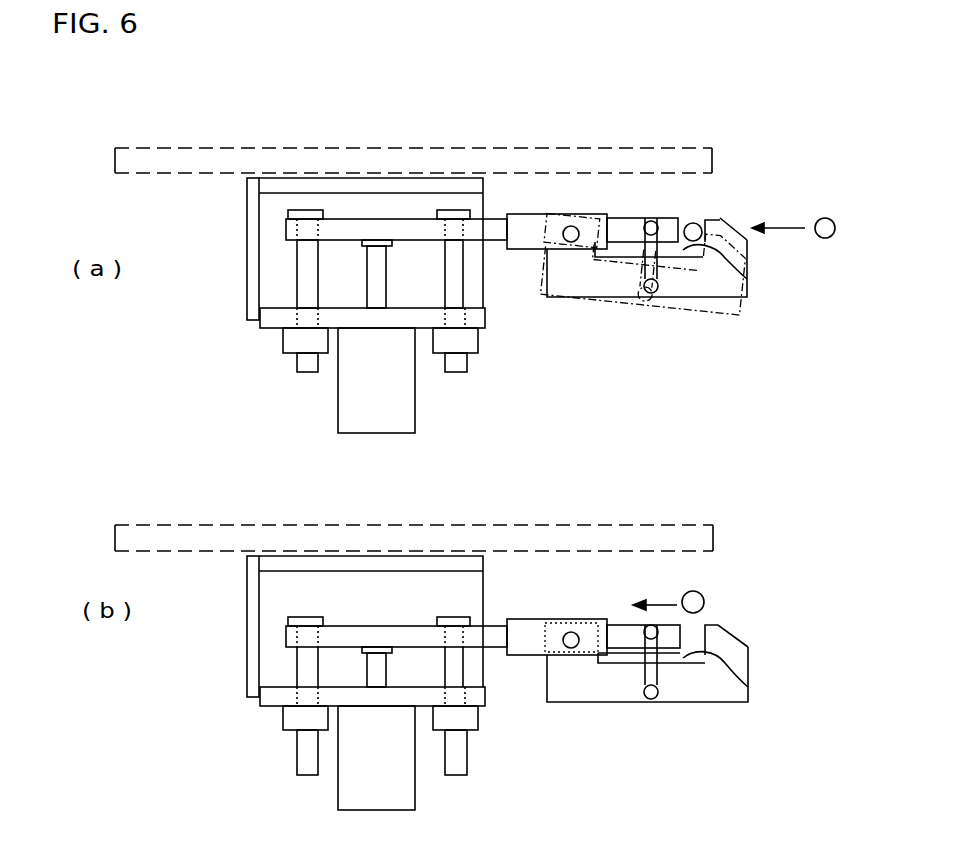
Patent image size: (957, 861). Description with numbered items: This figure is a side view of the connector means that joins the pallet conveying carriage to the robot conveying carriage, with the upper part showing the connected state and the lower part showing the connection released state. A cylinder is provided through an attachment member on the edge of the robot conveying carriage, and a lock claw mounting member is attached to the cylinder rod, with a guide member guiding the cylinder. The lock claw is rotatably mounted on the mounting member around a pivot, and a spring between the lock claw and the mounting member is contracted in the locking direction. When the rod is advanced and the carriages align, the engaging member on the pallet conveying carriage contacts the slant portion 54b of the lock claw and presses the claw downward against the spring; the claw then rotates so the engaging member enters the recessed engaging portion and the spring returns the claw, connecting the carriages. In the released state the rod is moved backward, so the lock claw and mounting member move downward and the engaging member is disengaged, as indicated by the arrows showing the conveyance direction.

The slant portion 54b is at (740, 230).